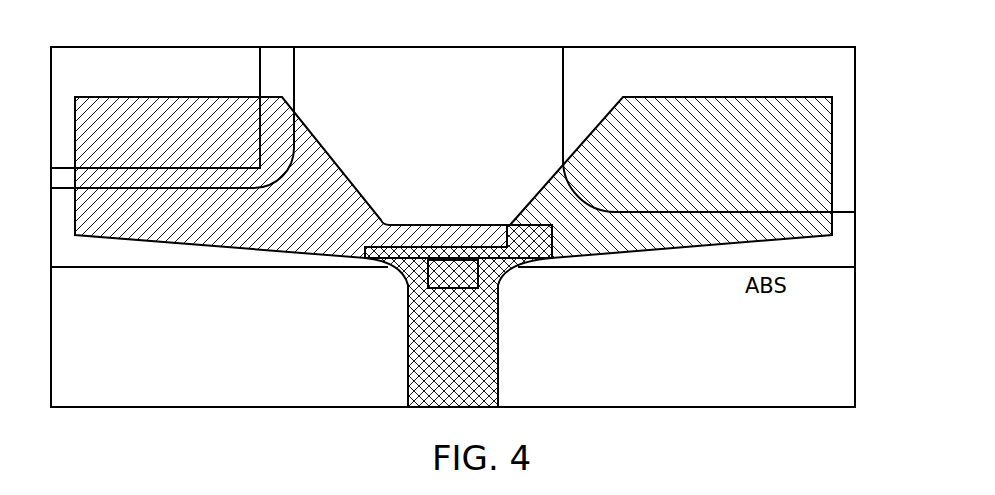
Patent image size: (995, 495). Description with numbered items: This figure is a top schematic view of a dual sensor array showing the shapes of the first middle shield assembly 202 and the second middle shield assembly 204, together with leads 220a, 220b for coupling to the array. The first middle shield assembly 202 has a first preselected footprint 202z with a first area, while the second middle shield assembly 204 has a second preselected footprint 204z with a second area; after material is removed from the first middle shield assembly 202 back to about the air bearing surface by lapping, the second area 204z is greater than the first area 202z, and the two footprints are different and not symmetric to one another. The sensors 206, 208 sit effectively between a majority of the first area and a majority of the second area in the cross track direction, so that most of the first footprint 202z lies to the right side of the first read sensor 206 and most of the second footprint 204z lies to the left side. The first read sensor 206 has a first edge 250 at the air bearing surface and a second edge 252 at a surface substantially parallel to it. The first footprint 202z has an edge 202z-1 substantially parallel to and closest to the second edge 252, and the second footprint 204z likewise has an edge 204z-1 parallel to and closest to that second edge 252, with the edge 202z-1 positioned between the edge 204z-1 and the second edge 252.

The first middle shield assembly 202 is at (540, 200).
The first preselected footprint 202z is at (623, 238).
The edge of first shield layer assembly footprint 202z-1 is at (395, 245).
The second middle shield assembly 204 is at (330, 155).
The second preselected footprint 204z is at (237, 229).
The edge of second shield layer assembly footprint 204z-1 is at (423, 225).
The first read sensor 206 is at (459, 316).
The sensor 208 is at (428, 268).
The lead 220a is at (294, 80).
The lead 220b is at (563, 103).
The first edge 250 is at (455, 270).
The second edge 252 is at (478, 268).